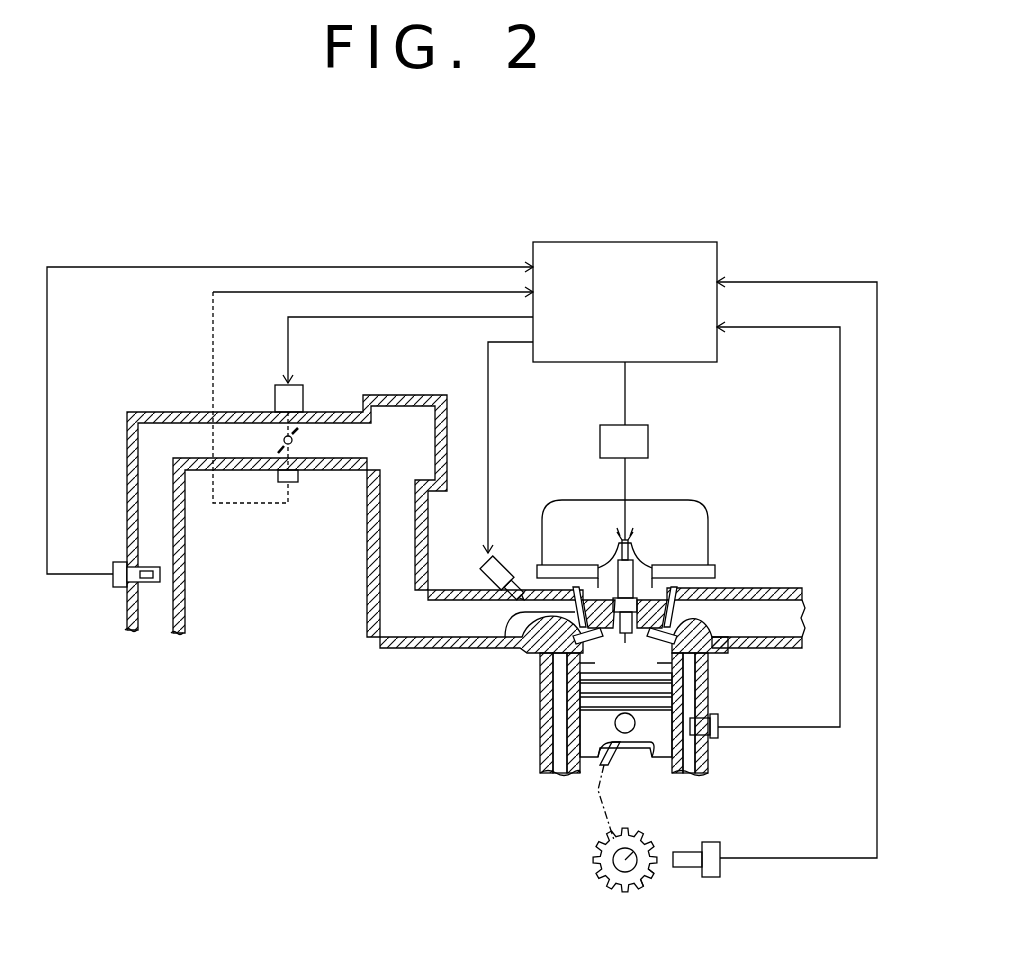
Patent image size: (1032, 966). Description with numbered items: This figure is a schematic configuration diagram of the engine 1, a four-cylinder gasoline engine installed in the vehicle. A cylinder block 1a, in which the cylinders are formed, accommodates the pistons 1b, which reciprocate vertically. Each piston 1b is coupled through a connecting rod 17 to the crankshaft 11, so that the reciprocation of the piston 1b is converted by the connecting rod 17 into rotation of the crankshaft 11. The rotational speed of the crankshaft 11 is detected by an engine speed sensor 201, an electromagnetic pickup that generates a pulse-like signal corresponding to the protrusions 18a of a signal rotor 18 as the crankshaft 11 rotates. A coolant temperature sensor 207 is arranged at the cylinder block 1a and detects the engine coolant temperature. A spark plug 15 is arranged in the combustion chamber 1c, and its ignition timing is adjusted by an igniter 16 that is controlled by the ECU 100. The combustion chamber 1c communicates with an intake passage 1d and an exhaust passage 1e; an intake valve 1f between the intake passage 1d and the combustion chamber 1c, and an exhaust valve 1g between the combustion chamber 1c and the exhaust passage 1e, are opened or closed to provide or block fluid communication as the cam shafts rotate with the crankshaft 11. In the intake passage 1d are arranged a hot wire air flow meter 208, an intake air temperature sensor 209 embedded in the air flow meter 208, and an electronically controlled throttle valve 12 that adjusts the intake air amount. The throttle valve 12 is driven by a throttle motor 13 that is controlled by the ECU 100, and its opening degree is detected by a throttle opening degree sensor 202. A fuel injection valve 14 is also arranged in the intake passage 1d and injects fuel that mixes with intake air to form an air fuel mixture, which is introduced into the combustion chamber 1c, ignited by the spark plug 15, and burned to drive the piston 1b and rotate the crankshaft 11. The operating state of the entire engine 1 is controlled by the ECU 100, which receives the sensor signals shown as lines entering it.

The ECU 100 is at (650, 242).
The igniter 16 is at (648, 442).
The spark plug 15 is at (633, 570).
The engine 1 is at (720, 547).
The fuel injection valve 14 is at (483, 575).
The throttle valve 12 is at (283, 440).
The throttle motor 13 is at (305, 402).
The air flow meter 208 is at (120, 562).
The intake air temperature sensor 209 is at (155, 572).
The throttle opening degree sensor 202 is at (300, 482).
The intake passage 1d is at (453, 620).
The intake valve 1f is at (511, 620).
The combustion chamber 1c is at (540, 682).
The piston 1b is at (578, 733).
The exhaust valve 1g is at (728, 640).
The exhaust passage 1e is at (763, 620).
The coolant temperature sensor 207 is at (718, 733).
The cylinder block 1a is at (708, 770).
The connecting rod 17 is at (632, 790).
The engine speed sensor 201 is at (712, 842).
The crankshaft 11 is at (596, 862).
The signal rotor 18 is at (608, 888).
The protrusion 18a is at (625, 888).